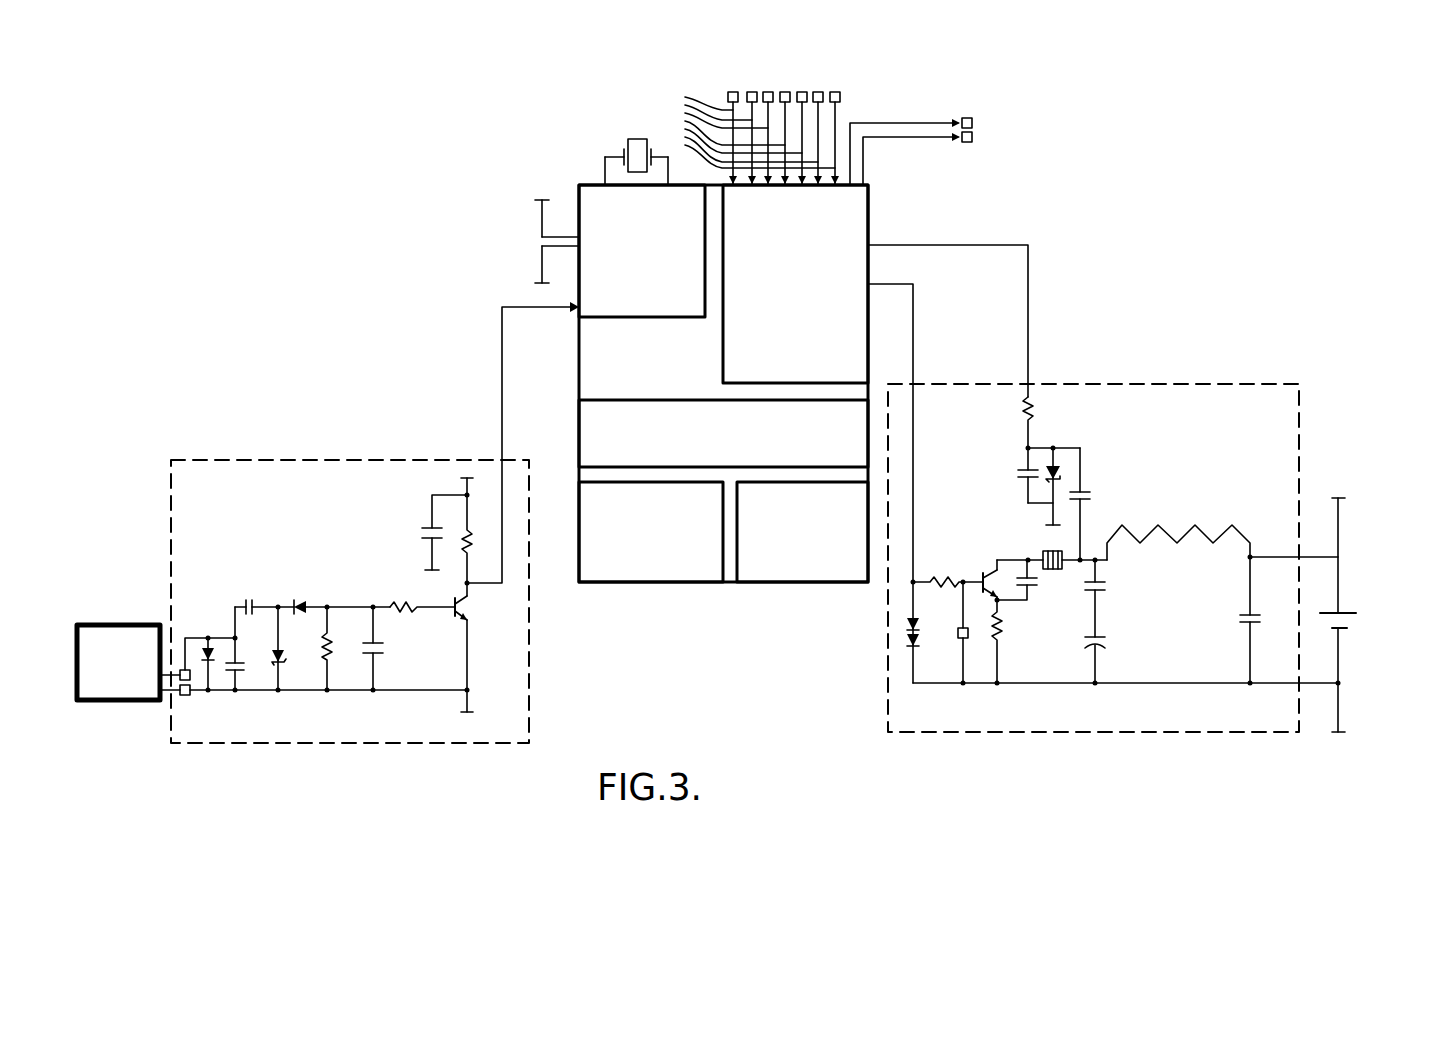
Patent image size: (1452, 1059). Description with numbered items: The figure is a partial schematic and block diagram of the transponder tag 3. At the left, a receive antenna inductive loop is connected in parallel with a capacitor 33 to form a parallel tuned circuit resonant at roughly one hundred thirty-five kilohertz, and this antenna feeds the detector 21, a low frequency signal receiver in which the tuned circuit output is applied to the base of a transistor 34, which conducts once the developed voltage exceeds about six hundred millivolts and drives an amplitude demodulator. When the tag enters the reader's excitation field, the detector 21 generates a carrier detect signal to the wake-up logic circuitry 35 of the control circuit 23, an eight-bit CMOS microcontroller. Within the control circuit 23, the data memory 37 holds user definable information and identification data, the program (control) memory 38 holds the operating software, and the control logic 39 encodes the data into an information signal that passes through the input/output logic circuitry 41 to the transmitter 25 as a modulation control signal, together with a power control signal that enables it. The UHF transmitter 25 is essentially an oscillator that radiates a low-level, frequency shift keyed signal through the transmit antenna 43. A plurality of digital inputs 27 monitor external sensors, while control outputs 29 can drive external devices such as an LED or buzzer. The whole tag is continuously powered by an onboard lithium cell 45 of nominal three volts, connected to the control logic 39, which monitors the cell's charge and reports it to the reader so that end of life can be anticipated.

The tag 3 is at (93, 622).
The detector 21 is at (318, 745).
The control circuit 23 is at (852, 620).
The transmitter 25 is at (1108, 384).
The digital inputs 27 is at (762, 107).
The control outputs 29 is at (941, 125).
The capacitor 33 is at (243, 655).
The transistor 34 is at (212, 652).
The wake-up logic circuitry 35 is at (598, 212).
The data memory 37 is at (853, 562).
The program (control) memory 38 is at (598, 567).
The control logic 39 is at (605, 435).
The input/output logic circuitry 41 is at (853, 216).
The transmit antenna 43 is at (1248, 540).
The lithium cell 45 is at (1348, 612).